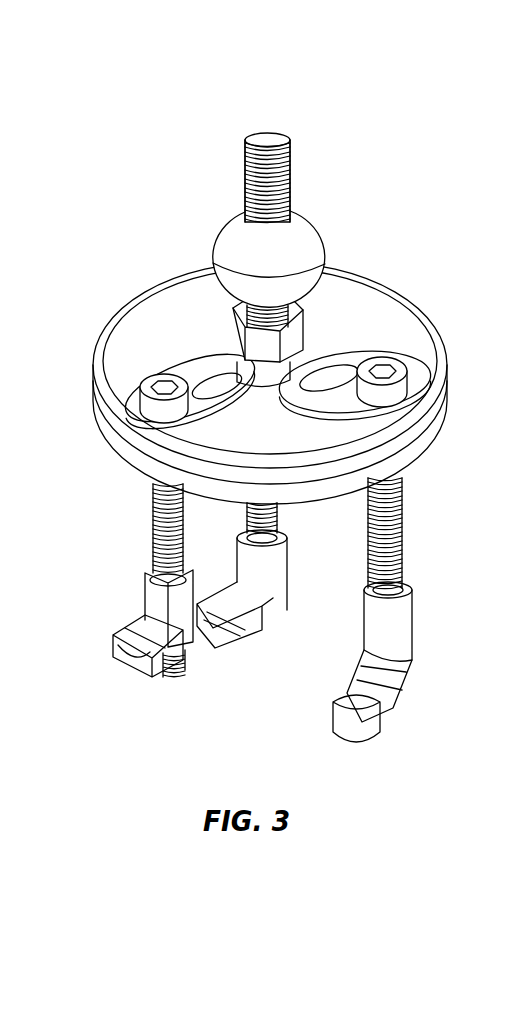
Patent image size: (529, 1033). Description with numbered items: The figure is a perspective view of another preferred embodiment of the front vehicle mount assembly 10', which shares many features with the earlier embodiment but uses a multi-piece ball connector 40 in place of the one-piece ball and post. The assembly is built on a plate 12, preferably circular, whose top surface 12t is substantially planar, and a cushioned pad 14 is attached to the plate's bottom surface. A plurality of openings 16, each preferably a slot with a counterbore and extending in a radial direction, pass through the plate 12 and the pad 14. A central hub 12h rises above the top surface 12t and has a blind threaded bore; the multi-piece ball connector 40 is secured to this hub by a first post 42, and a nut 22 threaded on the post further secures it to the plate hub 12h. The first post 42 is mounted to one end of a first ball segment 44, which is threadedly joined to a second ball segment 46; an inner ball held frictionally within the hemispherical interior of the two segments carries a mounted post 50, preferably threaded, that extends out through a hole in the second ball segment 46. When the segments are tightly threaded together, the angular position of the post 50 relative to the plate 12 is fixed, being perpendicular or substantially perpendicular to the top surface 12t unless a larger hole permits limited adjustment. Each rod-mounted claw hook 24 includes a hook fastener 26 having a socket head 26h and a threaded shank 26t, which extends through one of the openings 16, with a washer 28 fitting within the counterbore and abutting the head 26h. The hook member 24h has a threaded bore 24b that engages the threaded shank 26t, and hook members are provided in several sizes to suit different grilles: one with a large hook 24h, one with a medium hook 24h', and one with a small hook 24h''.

The front vehicle mount assembly 10' is at (464, 210).
The plate 12 is at (416, 318).
The top surface 12t is at (161, 308).
The hub 12h is at (270, 368).
The cushioned pad 14 is at (140, 462).
The openings 16 is at (205, 395).
The nut 22 is at (295, 336).
The rod-mounted claw hook 24 is at (424, 632).
The threaded bore 24b is at (148, 575).
The hook member 24h is at (403, 726).
The hook member with a medium hook 24h' is at (237, 649).
The hook member with a small hook 24h'' is at (115, 654).
The hook fastener 26 is at (400, 538).
The threaded shank 26t is at (155, 518).
The head 26h is at (150, 412).
The washer 28 is at (420, 413).
The multi-piece ball connector 40 is at (233, 201).
The first post 42 is at (243, 318).
The first ball segment 44 is at (305, 278).
The second ball segment 46 is at (222, 238).
The post 50 is at (290, 166).